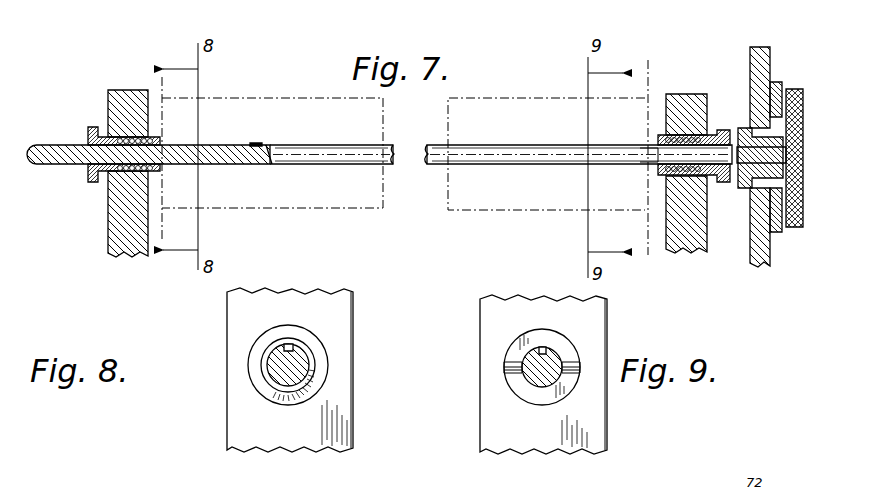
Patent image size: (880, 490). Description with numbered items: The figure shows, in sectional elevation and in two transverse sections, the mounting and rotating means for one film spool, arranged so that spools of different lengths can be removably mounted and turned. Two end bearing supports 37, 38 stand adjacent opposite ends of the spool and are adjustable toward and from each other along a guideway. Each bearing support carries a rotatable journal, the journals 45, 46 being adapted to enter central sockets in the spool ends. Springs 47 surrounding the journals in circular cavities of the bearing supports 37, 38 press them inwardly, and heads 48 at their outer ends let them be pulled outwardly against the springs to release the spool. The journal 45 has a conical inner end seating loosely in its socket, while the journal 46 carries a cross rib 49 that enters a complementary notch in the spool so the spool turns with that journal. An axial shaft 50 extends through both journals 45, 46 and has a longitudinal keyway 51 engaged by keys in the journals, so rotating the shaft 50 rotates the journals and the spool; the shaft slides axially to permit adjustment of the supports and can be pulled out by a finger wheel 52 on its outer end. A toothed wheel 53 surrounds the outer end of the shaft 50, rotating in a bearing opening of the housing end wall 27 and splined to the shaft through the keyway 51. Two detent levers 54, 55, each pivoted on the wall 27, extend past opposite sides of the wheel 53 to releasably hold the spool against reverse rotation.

In FIG. 7, the end wall 27 is at (762, 47).
In FIG. 7, the bearing support 37 is at (120, 90).
In FIG. 8, the bearing support 37 is at (340, 313).
In FIG. 7, the bearing support 38 is at (680, 94).
In FIG. 9, the bearing support 38 is at (532, 298).
In FIG. 7, the journal 45 is at (153, 172).
In FIG. 8, the journal 45 is at (317, 377).
In FIG. 7, the journal 46 is at (650, 172).
In FIG. 7, the spring 47 is at (130, 172).
In FIG. 7, the head 48 is at (93, 127).
In FIG. 7, the cross rib 49 is at (640, 148).
In FIG. 9, the cross rib 49 is at (506, 364).
In FIG. 7, the shaft 50 is at (429, 168).
In FIG. 8, the shaft 50 is at (284, 380).
In FIG. 9, the shaft 50 is at (532, 379).
In FIG. 7, the keyway 51 is at (247, 147).
In FIG. 8, the keyway 51 is at (292, 346).
In FIG. 9, the keyway 51 is at (540, 348).
In FIG. 7, the finger wheel 52 is at (795, 232).
In FIG. 7, the toothed wheel 53 is at (777, 205).
In FIG. 7, the detent lever 54 is at (777, 232).
In FIG. 7, the detent lever 55 is at (776, 82).